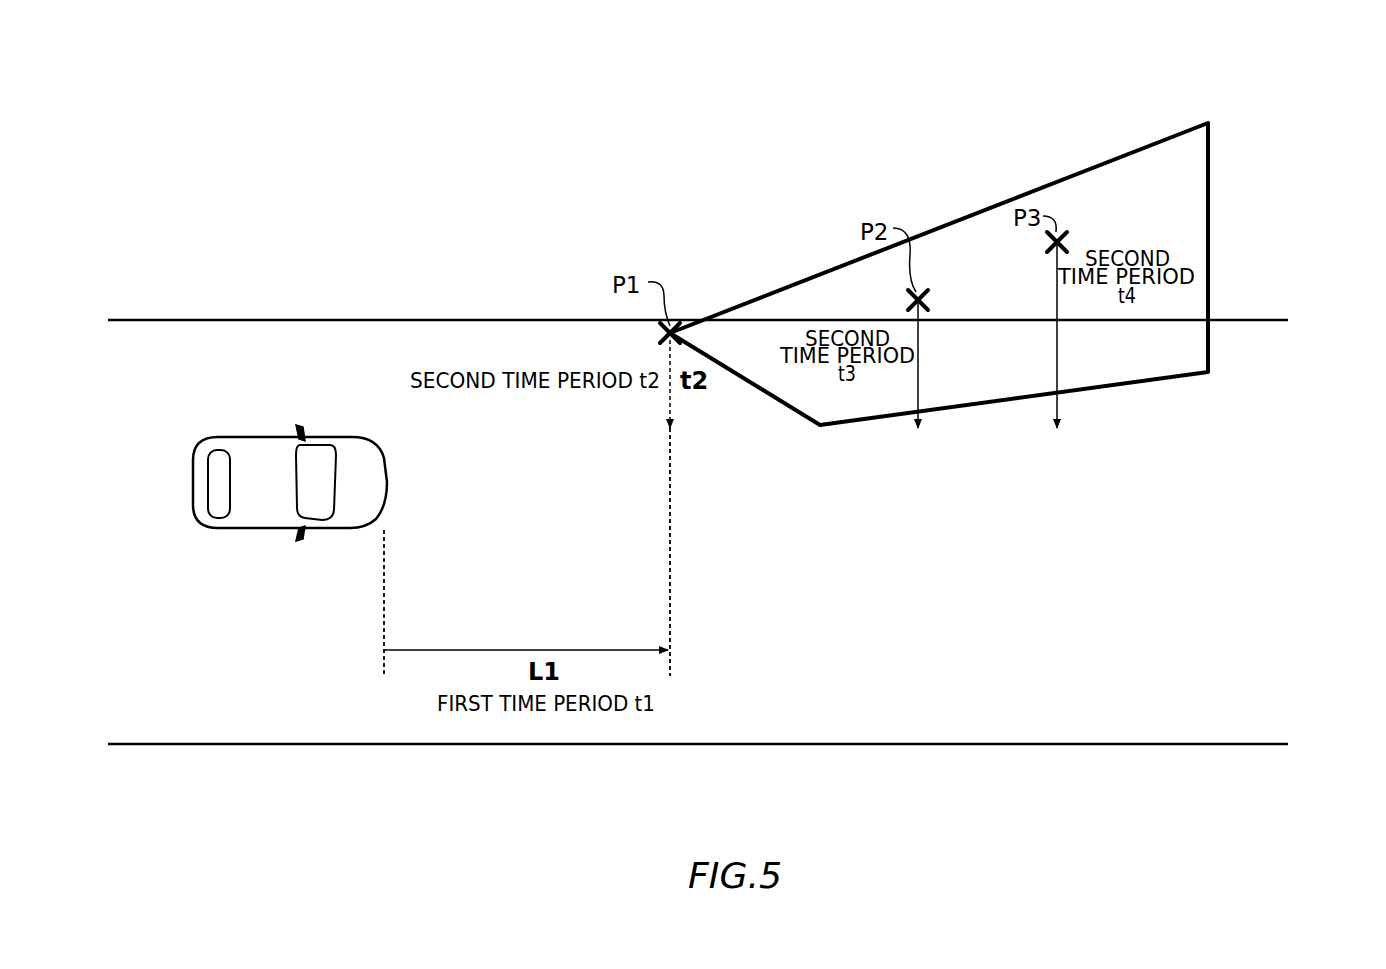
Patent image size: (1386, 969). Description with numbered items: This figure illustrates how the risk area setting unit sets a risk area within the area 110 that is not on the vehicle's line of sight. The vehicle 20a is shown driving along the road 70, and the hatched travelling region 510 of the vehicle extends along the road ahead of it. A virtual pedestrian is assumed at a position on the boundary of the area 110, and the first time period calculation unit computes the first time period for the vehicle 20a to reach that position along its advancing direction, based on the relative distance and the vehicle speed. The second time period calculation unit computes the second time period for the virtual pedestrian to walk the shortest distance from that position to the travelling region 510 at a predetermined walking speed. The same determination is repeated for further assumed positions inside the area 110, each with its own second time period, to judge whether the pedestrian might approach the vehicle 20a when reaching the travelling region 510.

The area 110 is at (1210, 121).
The travelling region 510 is at (1260, 428).
The vehicle 20a is at (193, 485).
The road 70 is at (283, 710).